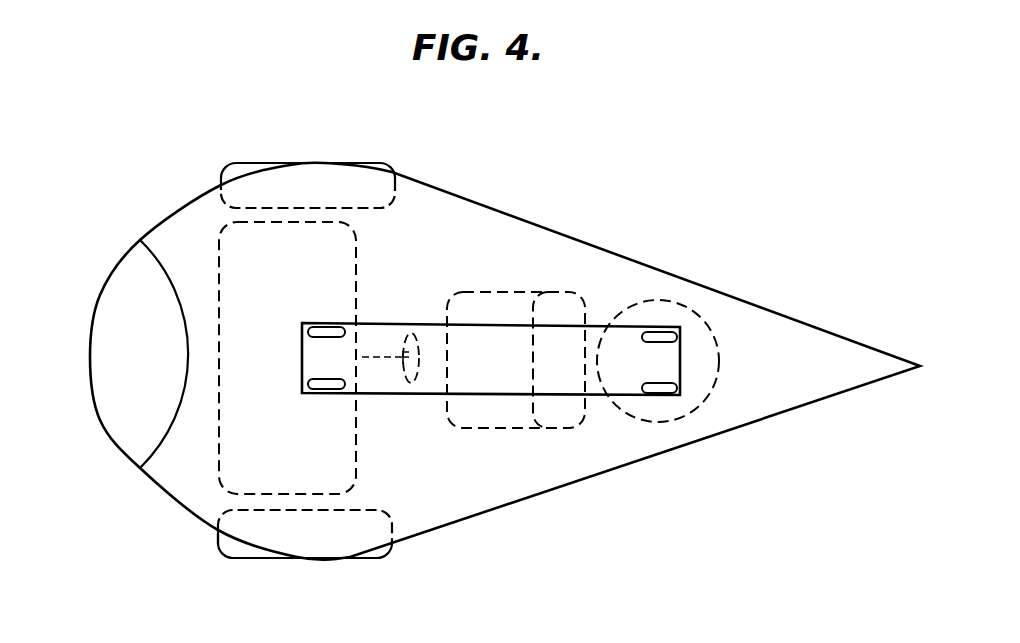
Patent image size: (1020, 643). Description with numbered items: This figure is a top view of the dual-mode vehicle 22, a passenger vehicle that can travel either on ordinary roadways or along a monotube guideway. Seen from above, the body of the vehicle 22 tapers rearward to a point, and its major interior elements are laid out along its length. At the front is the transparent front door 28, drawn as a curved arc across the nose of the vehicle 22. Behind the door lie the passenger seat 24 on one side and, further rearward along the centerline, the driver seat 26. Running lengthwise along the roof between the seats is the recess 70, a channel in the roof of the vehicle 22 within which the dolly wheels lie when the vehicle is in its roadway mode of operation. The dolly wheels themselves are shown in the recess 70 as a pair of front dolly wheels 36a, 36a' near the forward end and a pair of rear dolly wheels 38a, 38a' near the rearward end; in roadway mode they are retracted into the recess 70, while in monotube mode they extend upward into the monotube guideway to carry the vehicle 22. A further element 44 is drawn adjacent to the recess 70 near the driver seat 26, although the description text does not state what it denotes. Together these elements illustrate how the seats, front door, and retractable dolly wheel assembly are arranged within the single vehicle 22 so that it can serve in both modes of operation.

The vehicle 22 is at (475, 156).
The passenger seat 24 is at (217, 463).
The driver seat 26 is at (500, 291).
The transparent front door 28 is at (112, 293).
The front dolly wheel 36a is at (326, 412).
The front dolly wheel 36a' is at (352, 309).
The rear dolly wheel 38a is at (658, 381).
The rear dolly wheel 38a' is at (682, 293).
The steering pivot 44 is at (413, 330).
The recess 70 is at (428, 384).